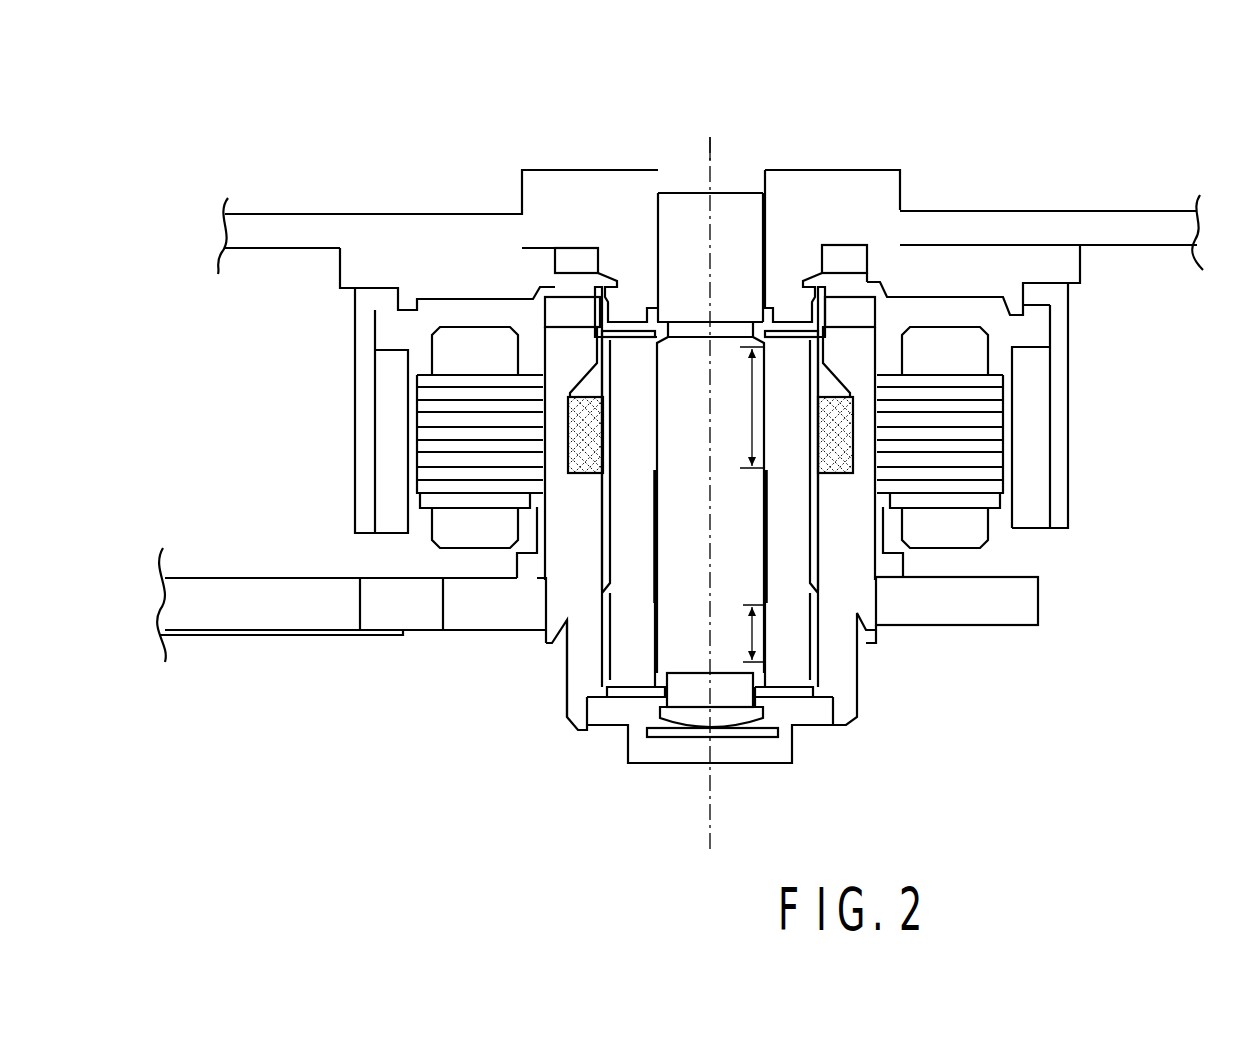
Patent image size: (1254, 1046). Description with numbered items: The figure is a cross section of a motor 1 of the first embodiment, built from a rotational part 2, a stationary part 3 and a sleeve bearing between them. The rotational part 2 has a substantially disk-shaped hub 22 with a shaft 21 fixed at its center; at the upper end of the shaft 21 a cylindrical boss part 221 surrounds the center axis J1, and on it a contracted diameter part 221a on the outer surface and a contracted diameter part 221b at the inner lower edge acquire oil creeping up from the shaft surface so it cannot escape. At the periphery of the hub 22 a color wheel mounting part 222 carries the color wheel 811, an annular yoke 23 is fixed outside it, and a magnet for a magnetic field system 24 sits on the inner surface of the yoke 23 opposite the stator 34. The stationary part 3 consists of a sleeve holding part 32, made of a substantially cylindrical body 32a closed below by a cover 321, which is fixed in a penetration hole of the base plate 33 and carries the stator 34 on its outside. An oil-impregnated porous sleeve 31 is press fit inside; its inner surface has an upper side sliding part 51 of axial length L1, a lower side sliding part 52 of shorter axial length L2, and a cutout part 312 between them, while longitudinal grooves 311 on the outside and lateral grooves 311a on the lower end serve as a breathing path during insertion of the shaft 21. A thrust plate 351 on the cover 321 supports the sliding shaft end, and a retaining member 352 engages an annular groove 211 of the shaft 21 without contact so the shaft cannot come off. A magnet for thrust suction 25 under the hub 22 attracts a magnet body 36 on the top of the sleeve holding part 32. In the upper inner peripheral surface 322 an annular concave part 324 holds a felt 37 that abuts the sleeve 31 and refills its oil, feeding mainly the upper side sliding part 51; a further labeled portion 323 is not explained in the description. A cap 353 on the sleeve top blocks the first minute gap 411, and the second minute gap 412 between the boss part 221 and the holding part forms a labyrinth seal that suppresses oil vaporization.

The motor 1 is at (237, 82).
The rotational part 2 is at (978, 130).
The stationary part 3 is at (538, 842).
The shaft 21 is at (657, 178).
The hub 22 is at (873, 195).
The boss part 221 is at (870, 282).
The contracted diameter part 221a is at (780, 307).
The contracted diameter part 221b is at (777, 310).
The color wheel mounting part 222 is at (1040, 260).
The yoke 23 is at (1060, 368).
The magnet for a magnetic field system 24 is at (1035, 445).
The magnet for thrust suction 25 is at (567, 265).
The sleeve 31 is at (635, 667).
The longitudinal grooves 311 is at (817, 350).
The lateral grooves 311a is at (797, 695).
The cutout part 312 is at (755, 562).
The sleeve holding part 32 is at (500, 822).
The substantially cylindrical body 32a is at (608, 630).
The cover 321 is at (610, 718).
The inner peripheral surface 322 is at (608, 567).
The housing upper end portion 323 is at (598, 295).
The annular concave part 324 is at (607, 473).
The base plate 33 is at (272, 610).
The stator 34 is at (992, 533).
The magnet body 36 is at (493, 300).
The felt 37 is at (568, 422).
The thrust plate 351 is at (738, 737).
The retaining member 352 is at (672, 740).
The cap 353 is at (623, 320).
The first minute gap 411 is at (597, 357).
The second minute gap 412 is at (593, 297).
The upper side sliding part 51 is at (766, 445).
The lower side sliding part 52 is at (823, 687).
The annular groove 211 is at (775, 700).
The color wheel 811 is at (253, 225).
The center axis J1 is at (708, 158).
The axial length L1 is at (739, 407).
The axial length L2 is at (739, 634).